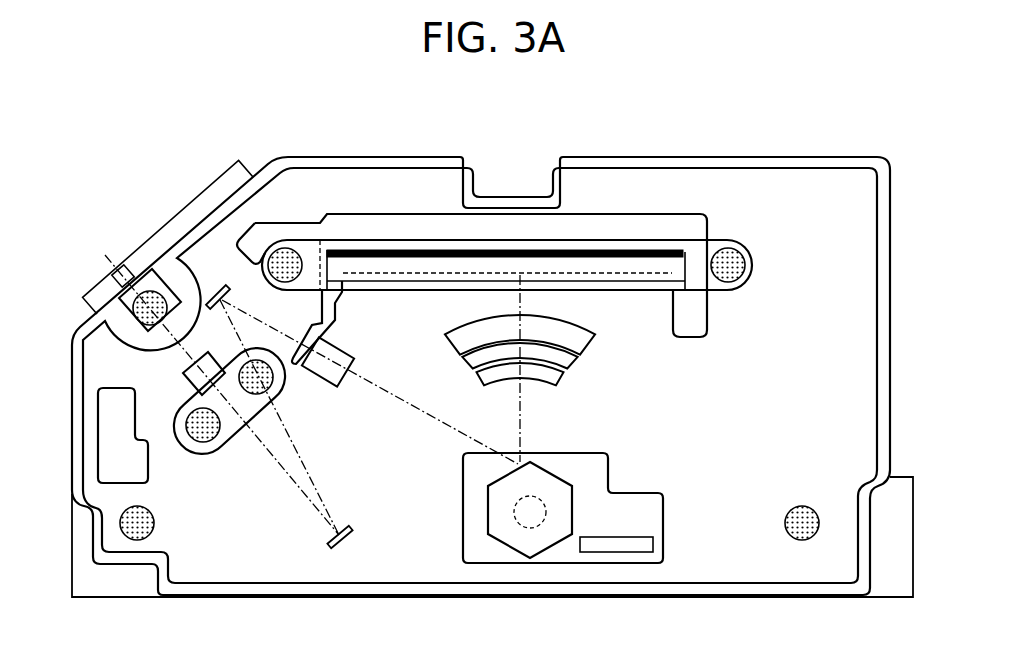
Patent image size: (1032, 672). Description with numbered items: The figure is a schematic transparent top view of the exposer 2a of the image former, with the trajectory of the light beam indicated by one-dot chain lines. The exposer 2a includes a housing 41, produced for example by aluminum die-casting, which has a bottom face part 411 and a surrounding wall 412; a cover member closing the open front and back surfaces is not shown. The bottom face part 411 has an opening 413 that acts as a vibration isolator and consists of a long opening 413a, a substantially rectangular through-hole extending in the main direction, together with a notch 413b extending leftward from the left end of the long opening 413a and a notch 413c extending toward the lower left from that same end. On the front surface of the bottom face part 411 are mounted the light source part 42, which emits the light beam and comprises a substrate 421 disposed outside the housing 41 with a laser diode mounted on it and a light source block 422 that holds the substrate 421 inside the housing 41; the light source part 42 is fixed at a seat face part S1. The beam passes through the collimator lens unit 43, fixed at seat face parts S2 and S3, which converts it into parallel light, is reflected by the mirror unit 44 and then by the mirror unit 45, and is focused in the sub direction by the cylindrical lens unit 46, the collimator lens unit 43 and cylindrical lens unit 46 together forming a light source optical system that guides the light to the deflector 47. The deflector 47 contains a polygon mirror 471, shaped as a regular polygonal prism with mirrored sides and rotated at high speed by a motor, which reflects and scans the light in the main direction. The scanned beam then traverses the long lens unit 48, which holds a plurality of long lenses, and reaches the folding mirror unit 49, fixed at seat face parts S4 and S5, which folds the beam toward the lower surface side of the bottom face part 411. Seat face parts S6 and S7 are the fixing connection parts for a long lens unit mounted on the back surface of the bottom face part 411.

The exposer 2a is at (504, 335).
The housing 41 is at (627, 155).
The bottom face part 411 is at (682, 182).
The wall 412 is at (773, 162).
The opening 413 is at (511, 229).
The long opening 413a is at (412, 230).
The notch 413b is at (272, 220).
The notch 413c is at (335, 312).
The light source part 42 is at (135, 293).
The substrate 421 is at (157, 232).
The light source block 422 is at (97, 343).
The collimator lens unit 43 is at (245, 433).
The mirror unit 44 is at (340, 545).
The mirror unit 45 is at (220, 292).
The cylindrical lens unit 46 is at (320, 345).
The deflector 47 is at (549, 547).
The polygon mirror 471 is at (508, 545).
The long lens unit 48 is at (590, 340).
The folding mirror unit 49 is at (635, 258).
The seat face part S1 is at (148, 314).
The seat face part S2 is at (205, 442).
The seat face part S3 is at (272, 382).
The seat face part S4 is at (293, 255).
The seat face part S5 is at (735, 258).
The seat face part S6 is at (134, 540).
The seat face part S7 is at (797, 513).